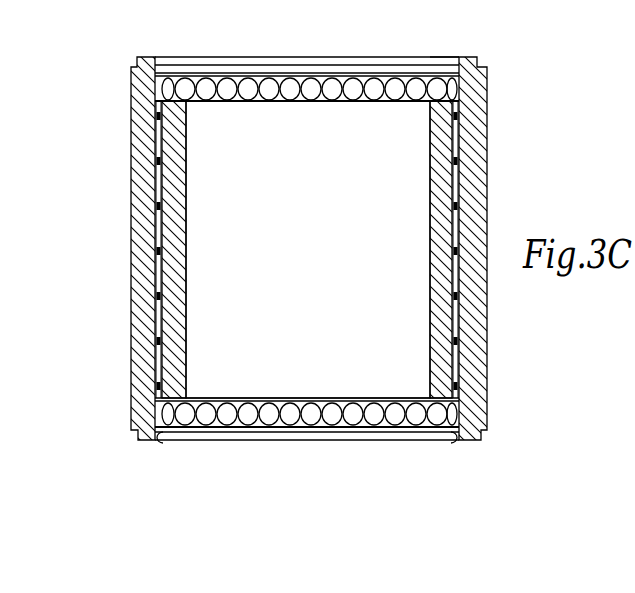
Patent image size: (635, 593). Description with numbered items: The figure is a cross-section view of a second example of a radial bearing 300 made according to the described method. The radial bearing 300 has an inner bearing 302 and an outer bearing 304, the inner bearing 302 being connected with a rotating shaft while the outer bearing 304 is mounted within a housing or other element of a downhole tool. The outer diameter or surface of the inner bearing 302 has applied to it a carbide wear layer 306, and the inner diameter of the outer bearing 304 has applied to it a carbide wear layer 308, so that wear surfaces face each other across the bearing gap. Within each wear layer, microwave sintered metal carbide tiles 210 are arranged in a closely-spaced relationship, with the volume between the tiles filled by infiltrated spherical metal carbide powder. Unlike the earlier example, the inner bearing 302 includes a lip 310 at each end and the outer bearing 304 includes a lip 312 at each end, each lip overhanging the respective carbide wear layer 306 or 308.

The radial bearing 300 is at (112, 44).
The microwave sintered metal carbide tiles 210 is at (152, 150).
The inner bearing 302 is at (186, 205).
The outer bearing 304 is at (480, 342).
The carbide wear layer 306 is at (172, 270).
The carbide wear layer 308 is at (217, 85).
The lip 310 is at (164, 112).
The lip 312 is at (437, 64).